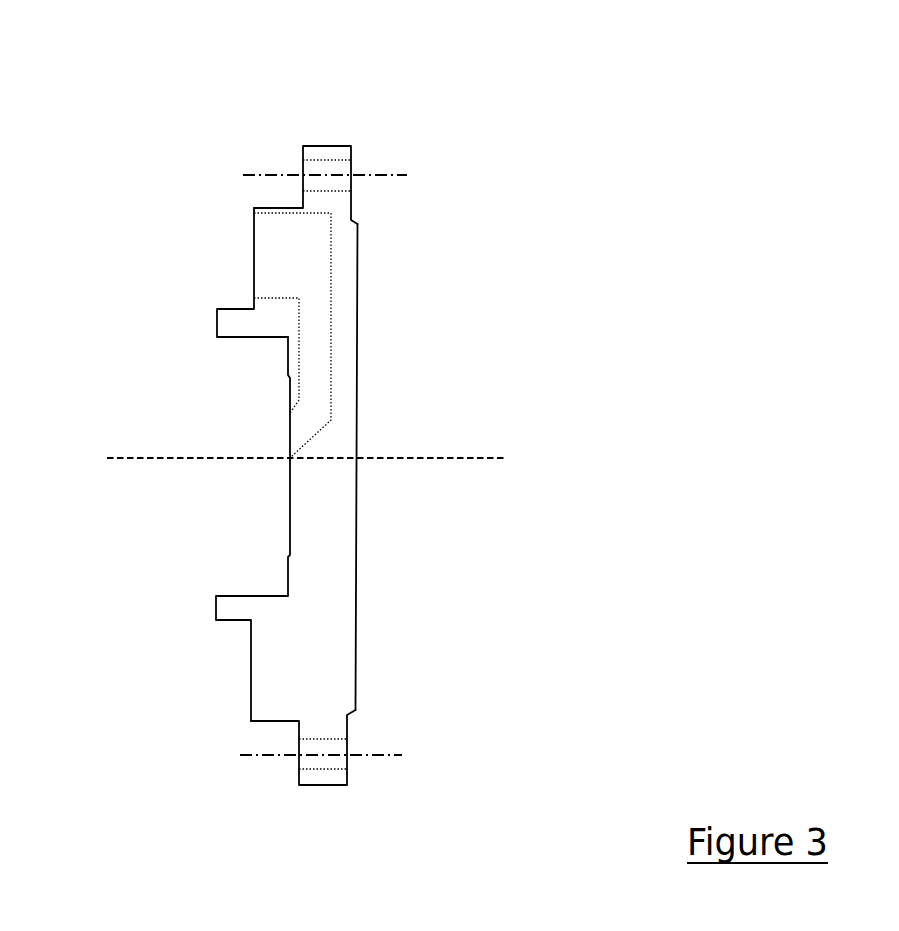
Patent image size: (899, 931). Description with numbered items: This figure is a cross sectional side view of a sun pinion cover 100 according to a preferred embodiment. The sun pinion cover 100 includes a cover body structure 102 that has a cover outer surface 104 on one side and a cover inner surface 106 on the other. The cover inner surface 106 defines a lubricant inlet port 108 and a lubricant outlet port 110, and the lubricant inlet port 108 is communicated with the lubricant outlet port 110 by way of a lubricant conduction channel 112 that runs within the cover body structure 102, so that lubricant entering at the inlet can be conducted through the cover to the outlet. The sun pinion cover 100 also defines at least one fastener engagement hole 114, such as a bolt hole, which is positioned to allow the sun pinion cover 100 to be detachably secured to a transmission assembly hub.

The sun pinion cover 100 is at (672, 67).
The cover body structure 102 is at (330, 130).
The cover outer surface 104 is at (427, 467).
The cover inner surface 106 is at (218, 589).
The lubricant inlet port 108 is at (201, 272).
The lubricant outlet port 110 is at (227, 378).
The lubricant conduction channel 112 is at (358, 335).
The fastener engagement hole 114 is at (359, 776).